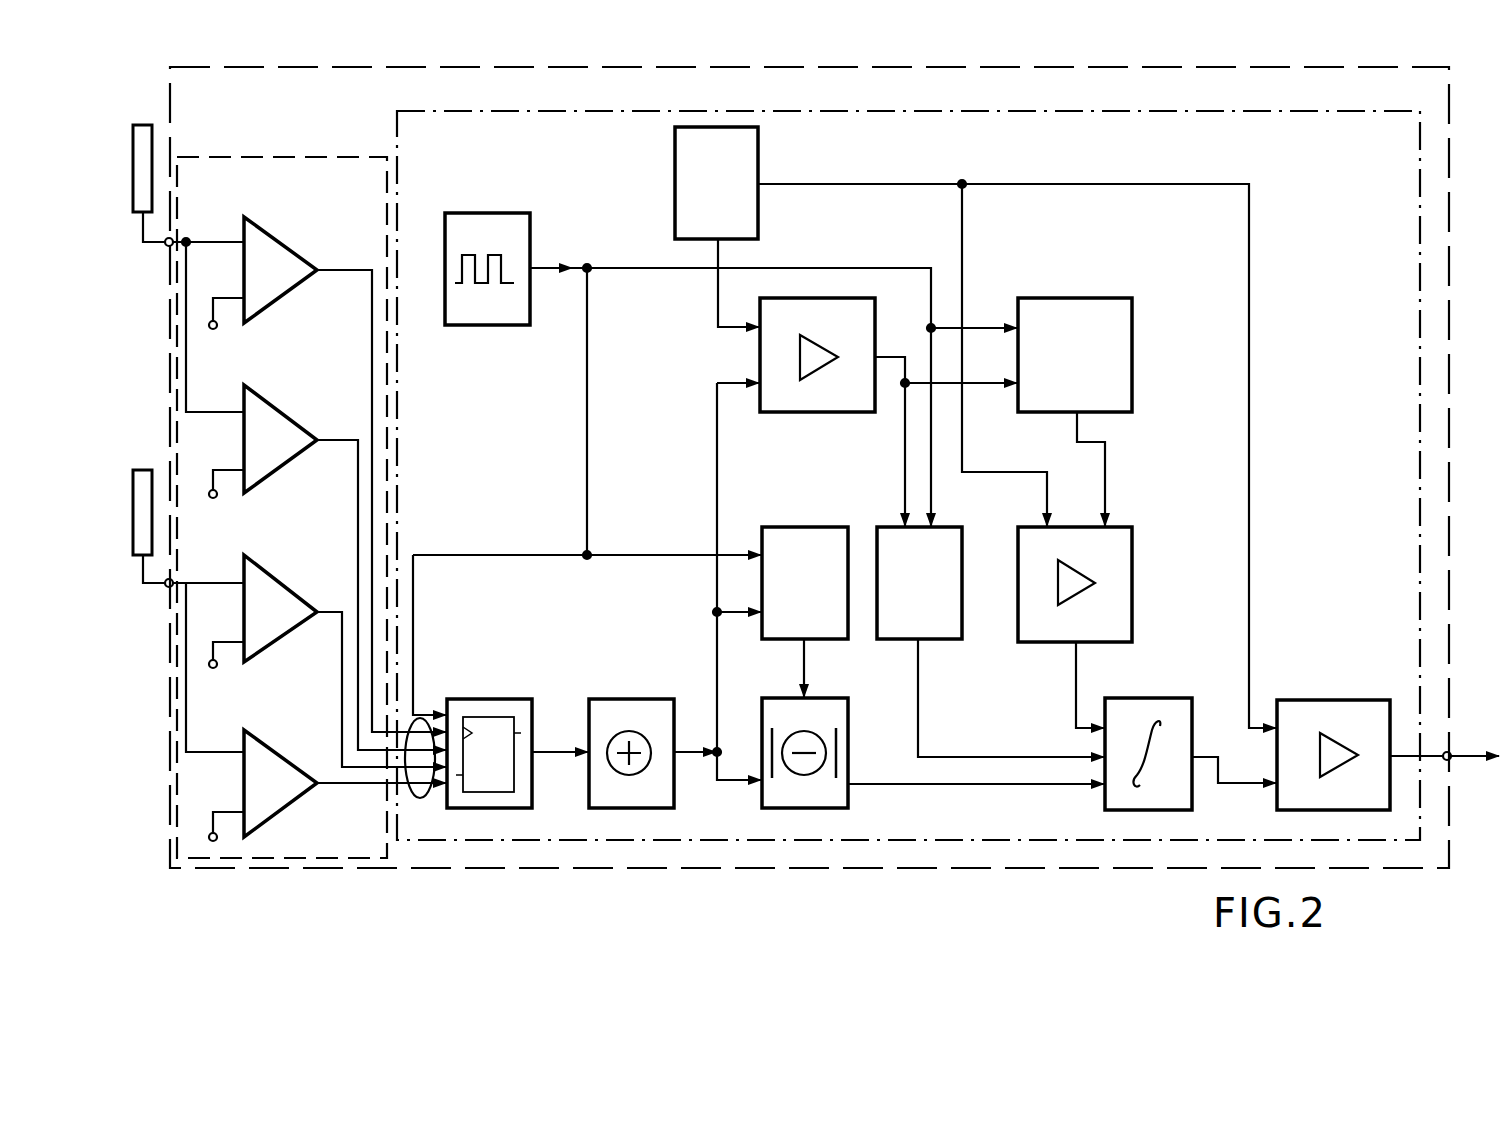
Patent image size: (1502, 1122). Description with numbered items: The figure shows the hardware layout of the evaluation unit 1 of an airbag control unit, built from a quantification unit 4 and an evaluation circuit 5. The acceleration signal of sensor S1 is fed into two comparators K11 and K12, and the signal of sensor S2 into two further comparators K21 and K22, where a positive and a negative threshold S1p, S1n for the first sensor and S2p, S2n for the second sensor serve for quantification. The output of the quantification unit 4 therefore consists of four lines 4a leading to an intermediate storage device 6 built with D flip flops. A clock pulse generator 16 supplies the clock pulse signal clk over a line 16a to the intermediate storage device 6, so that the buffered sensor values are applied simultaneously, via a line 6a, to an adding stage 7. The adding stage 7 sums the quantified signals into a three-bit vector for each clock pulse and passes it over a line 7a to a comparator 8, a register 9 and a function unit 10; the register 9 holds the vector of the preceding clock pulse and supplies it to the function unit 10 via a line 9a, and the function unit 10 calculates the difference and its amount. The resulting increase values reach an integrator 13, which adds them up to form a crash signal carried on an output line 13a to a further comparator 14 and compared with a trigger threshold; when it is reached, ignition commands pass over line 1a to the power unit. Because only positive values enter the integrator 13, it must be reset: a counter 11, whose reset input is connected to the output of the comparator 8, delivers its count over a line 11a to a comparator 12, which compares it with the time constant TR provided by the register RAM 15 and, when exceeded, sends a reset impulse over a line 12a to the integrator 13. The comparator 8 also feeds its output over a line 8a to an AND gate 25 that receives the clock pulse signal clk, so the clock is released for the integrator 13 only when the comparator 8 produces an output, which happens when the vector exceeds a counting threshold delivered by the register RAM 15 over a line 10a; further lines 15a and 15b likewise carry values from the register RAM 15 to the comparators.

The evaluation unit 1 is at (874, 870).
The line 1a is at (1474, 760).
The quantification unit 4 is at (237, 157).
The lines 4a is at (418, 798).
The evaluation circuit 5 is at (684, 846).
The intermediate storage device 6 is at (490, 699).
The line 6a is at (559, 748).
The adding stage 7 is at (640, 699).
The line 7a is at (720, 682).
The comparator 8 is at (788, 412).
The line 8a is at (890, 354).
The register 9 is at (803, 527).
The line 9a is at (808, 672).
The function unit 10 is at (852, 800).
The line 10a is at (982, 785).
The counter 11 is at (1132, 338).
The line 11a is at (1107, 478).
The comparator 12 is at (1132, 548).
The line 12a is at (1075, 680).
The integrator 13 is at (1160, 698).
The integrator output 13a is at (1228, 785).
The comparator 14 is at (1349, 700).
The register RAM 15 is at (760, 150).
The memory output 15a is at (718, 302).
The memory output line 15b is at (887, 180).
The clock pulse generator 16 is at (500, 213).
The line 16a is at (567, 263).
The AND gate 25 is at (945, 640).
The acceleration sensor S1 is at (143, 125).
The acceleration sensor S2 is at (143, 470).
The comparator K11 is at (292, 244).
The comparator K12 is at (296, 418).
The comparator K21 is at (296, 590).
The comparator K22 is at (288, 758).
The positive threshold S1p is at (216, 330).
The negative threshold S1n is at (218, 501).
The positive threshold S2p is at (216, 668).
The negative threshold S2n is at (218, 842).
The time constant TR is at (992, 474).